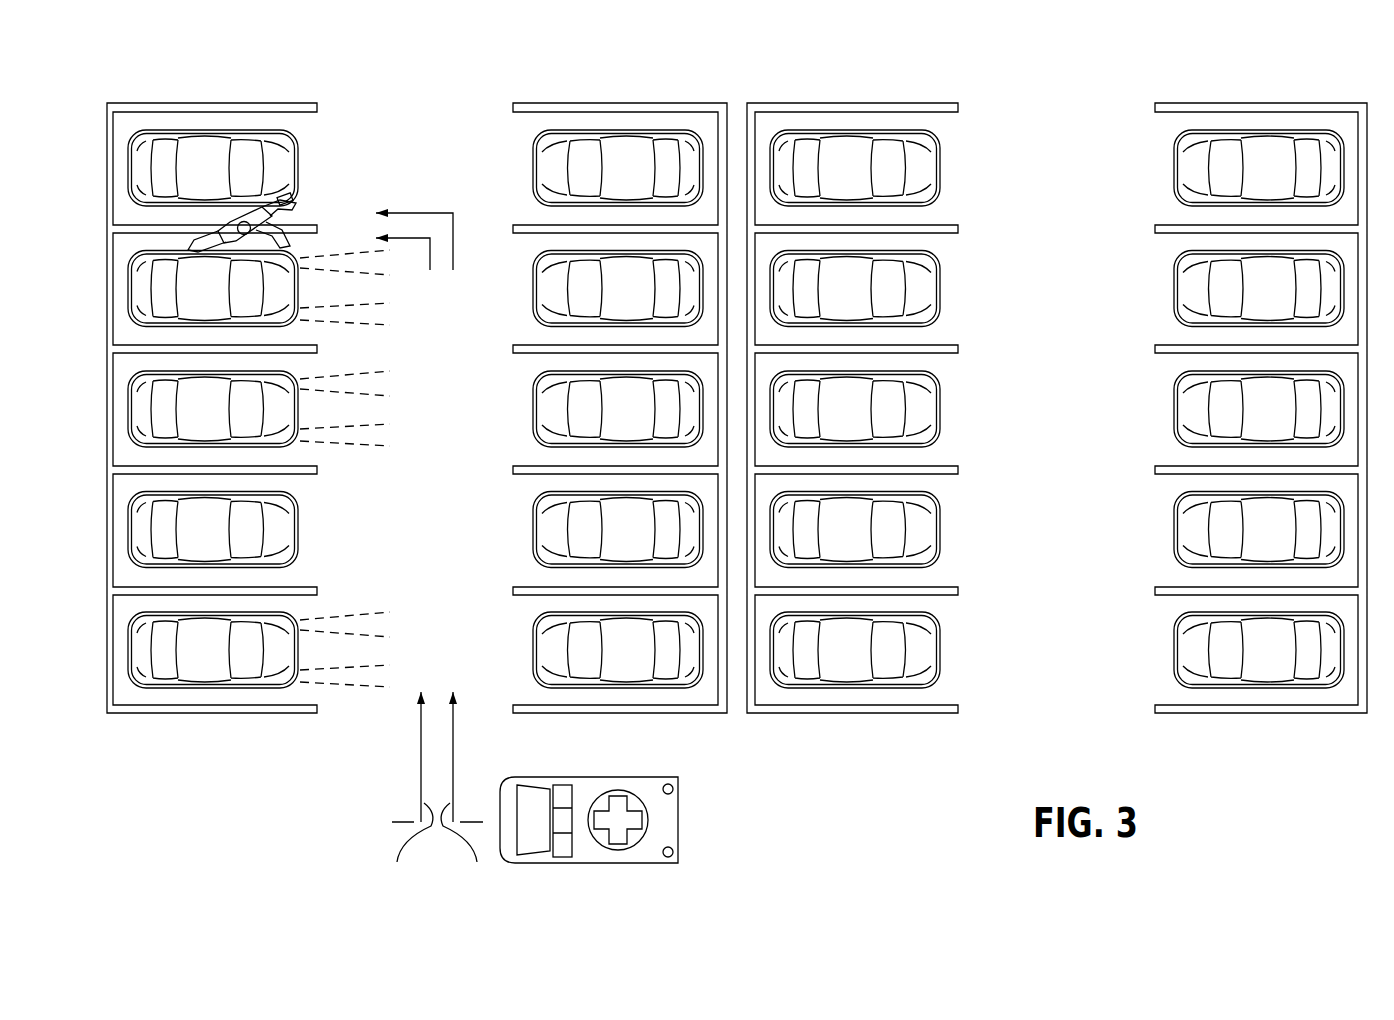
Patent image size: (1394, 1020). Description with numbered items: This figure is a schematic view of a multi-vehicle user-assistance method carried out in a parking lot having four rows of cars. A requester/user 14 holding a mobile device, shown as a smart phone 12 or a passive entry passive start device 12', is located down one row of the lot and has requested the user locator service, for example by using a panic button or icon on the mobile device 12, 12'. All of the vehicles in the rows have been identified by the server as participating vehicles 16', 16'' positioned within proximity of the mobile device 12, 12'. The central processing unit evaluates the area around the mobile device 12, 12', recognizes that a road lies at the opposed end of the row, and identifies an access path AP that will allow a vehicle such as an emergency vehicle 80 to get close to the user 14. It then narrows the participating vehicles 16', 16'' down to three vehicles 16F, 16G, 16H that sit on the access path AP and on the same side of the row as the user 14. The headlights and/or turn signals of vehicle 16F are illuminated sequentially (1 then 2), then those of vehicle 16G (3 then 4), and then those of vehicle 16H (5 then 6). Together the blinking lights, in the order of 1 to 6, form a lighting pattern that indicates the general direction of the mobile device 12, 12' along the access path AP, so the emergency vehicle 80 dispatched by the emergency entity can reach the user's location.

The first sequential illumination step 1 is at (398, 663).
The second sequential illumination step 2 is at (398, 610).
The third sequential illumination step 3 is at (398, 422).
The fourth sequential illumination step 4 is at (398, 369).
The fifth sequential illumination step 5 is at (398, 301).
The sixth sequential illumination step 6 is at (398, 248).
The smart phone 12 is at (328, 168).
The passive entry passive start device 12' is at (328, 168).
The requester/user 14 is at (296, 205).
The participating vehicle 16' is at (736, 403).
The participating vehicle 16'' is at (736, 403).
The participating vehicle 16F is at (225, 661).
The participating vehicle 16G is at (225, 423).
The participating vehicle 16H is at (225, 302).
The emergency vehicle 80 is at (663, 822).
The access path AP is at (439, 791).